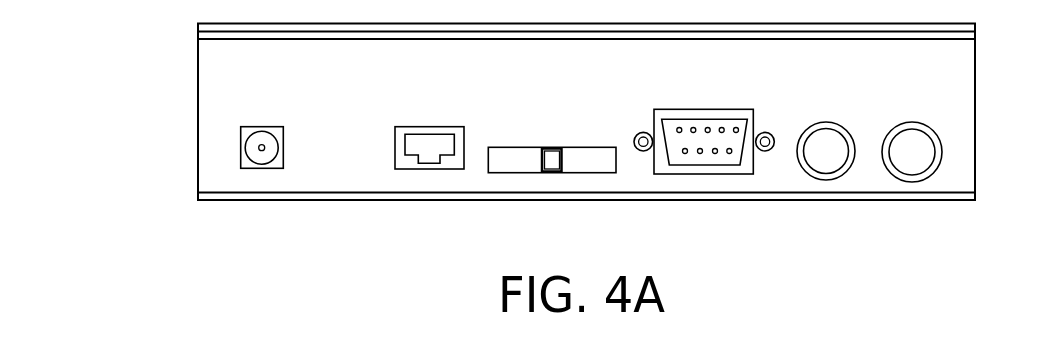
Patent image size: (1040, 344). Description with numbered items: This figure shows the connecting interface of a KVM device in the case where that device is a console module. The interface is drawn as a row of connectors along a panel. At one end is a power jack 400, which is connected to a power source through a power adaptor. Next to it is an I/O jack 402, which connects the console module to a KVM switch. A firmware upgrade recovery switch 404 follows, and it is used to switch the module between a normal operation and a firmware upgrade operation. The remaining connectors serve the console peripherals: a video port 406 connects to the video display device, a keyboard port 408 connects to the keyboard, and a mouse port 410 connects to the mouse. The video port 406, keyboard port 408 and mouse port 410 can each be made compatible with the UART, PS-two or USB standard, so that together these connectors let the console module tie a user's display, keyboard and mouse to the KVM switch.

The power jack 400 is at (263, 127).
The I/O jack 402 is at (410, 127).
The firmware upgrade recovery switch 404 is at (523, 147).
The video port 406 is at (703, 109).
The keyboard port 408 is at (818, 122).
The mouse port 410 is at (933, 130).